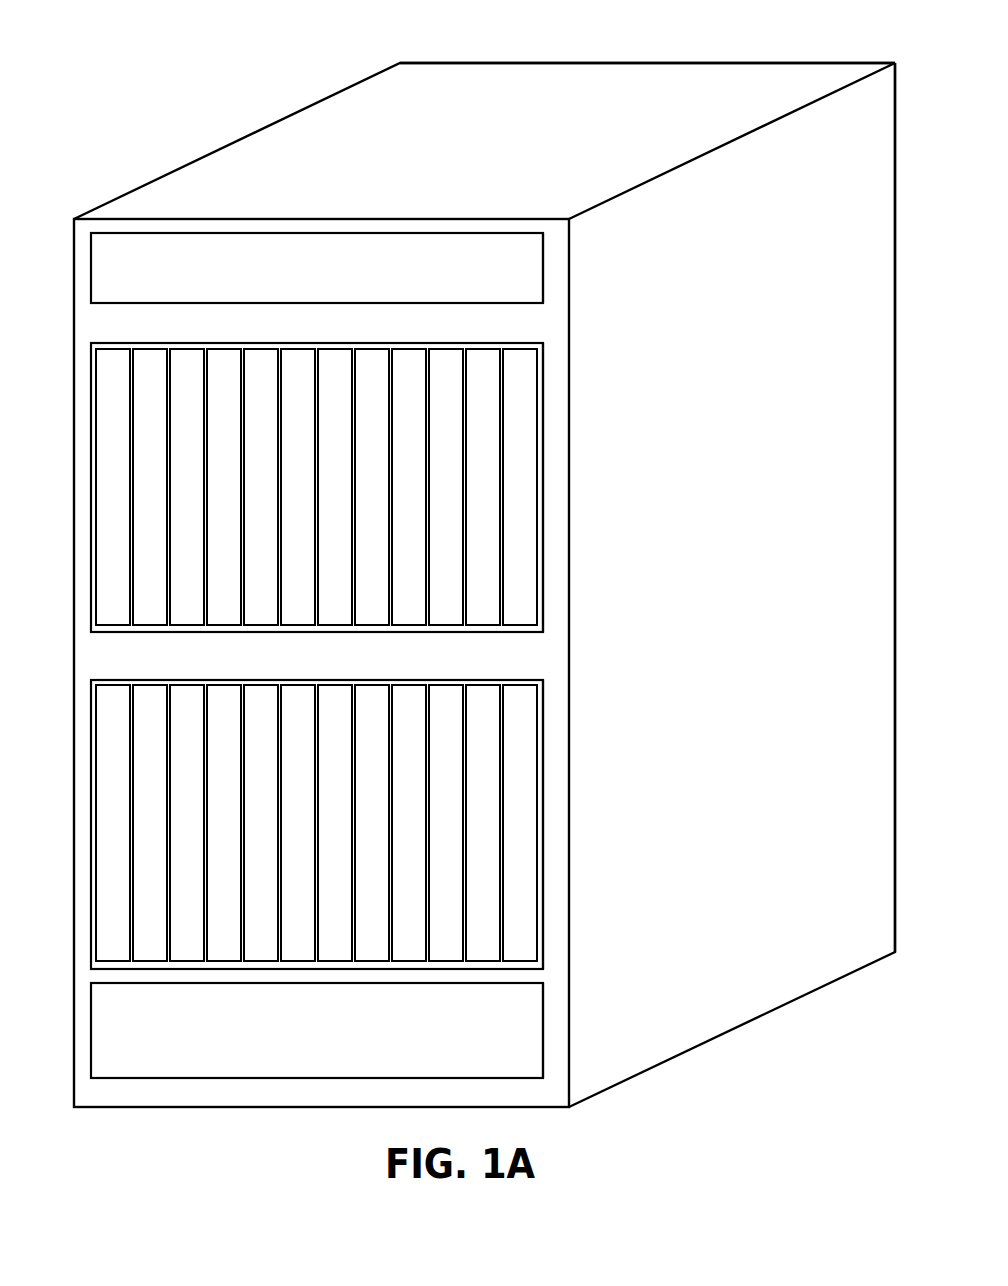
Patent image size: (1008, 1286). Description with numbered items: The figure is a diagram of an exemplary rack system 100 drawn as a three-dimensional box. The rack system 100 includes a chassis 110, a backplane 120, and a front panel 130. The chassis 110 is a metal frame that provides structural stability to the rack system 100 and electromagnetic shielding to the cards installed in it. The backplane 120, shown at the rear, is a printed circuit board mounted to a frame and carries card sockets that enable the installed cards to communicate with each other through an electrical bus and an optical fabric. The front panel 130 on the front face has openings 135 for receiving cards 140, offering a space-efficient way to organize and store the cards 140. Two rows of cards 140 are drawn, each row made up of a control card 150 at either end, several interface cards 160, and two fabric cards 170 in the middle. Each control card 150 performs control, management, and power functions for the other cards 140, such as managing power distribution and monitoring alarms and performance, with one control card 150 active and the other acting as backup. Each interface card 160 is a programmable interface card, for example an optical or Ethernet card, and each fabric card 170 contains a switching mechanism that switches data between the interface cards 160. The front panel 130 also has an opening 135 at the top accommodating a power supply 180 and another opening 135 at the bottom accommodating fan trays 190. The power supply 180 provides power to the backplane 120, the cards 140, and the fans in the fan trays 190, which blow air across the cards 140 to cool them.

The rack system 100 is at (176, 72).
The chassis 110 is at (293, 115).
The backplane 120 is at (683, 63).
The front panel 130 is at (100, 219).
The openings 135 is at (548, 301).
The cards 140 is at (91, 343).
The control card 150 is at (316, 655).
The interface card 160 is at (316, 655).
The fabric card 170 is at (316, 655).
The power supply 180 is at (317, 268).
The fan trays 190 is at (317, 1030).